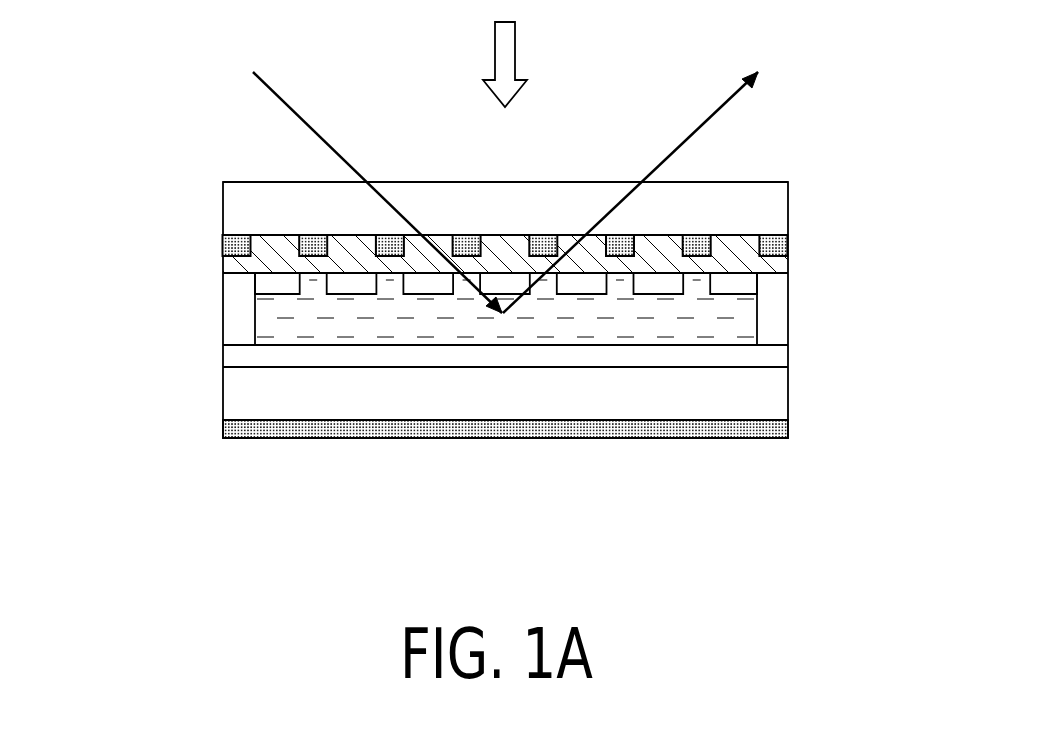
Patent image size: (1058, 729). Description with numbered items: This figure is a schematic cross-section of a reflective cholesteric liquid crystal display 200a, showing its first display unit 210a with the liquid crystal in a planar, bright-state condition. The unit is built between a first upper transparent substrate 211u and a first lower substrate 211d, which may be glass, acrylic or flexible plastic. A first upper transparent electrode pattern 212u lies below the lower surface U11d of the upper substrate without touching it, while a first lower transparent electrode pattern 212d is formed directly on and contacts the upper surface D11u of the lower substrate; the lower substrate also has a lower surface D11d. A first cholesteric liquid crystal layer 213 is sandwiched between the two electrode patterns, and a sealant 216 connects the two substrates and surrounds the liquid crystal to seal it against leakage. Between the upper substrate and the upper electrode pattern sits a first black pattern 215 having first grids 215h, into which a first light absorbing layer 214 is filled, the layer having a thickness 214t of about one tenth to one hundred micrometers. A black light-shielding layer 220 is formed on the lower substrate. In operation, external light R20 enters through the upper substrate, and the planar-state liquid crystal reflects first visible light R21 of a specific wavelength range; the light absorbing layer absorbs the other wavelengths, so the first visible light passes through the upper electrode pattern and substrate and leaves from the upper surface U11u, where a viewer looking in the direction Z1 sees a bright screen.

The reflective cholesteric liquid crystal display 200a is at (177, 28).
The first display unit 210a is at (162, 293).
The first upper transparent substrate 211u is at (778, 203).
The first lower substrate 211d is at (770, 397).
The first upper transparent electrode pattern 212u is at (748, 283).
The first lower transparent electrode pattern 212d is at (770, 357).
The first cholesteric liquid crystal layer 213 is at (735, 325).
The first light absorbing layer 214 is at (778, 266).
The thickness of the first light absorbing layer 214t is at (223, 273).
The first black pattern 215 is at (242, 223).
The first grids 215h is at (283, 231).
The sealant 216 is at (232, 307).
The black light-shielding layer 220 is at (222, 431).
The external light R20 is at (308, 122).
The first visible light R21 is at (703, 117).
The direction Z1 is at (508, 50).
The upper surface of the first upper transparent substrate U11u is at (763, 172).
The lower surface of the first upper transparent substrate U11d is at (661, 248).
The upper surface of the first lower substrate D11u is at (358, 355).
The lower surface of the first lower substrate D11d is at (373, 420).